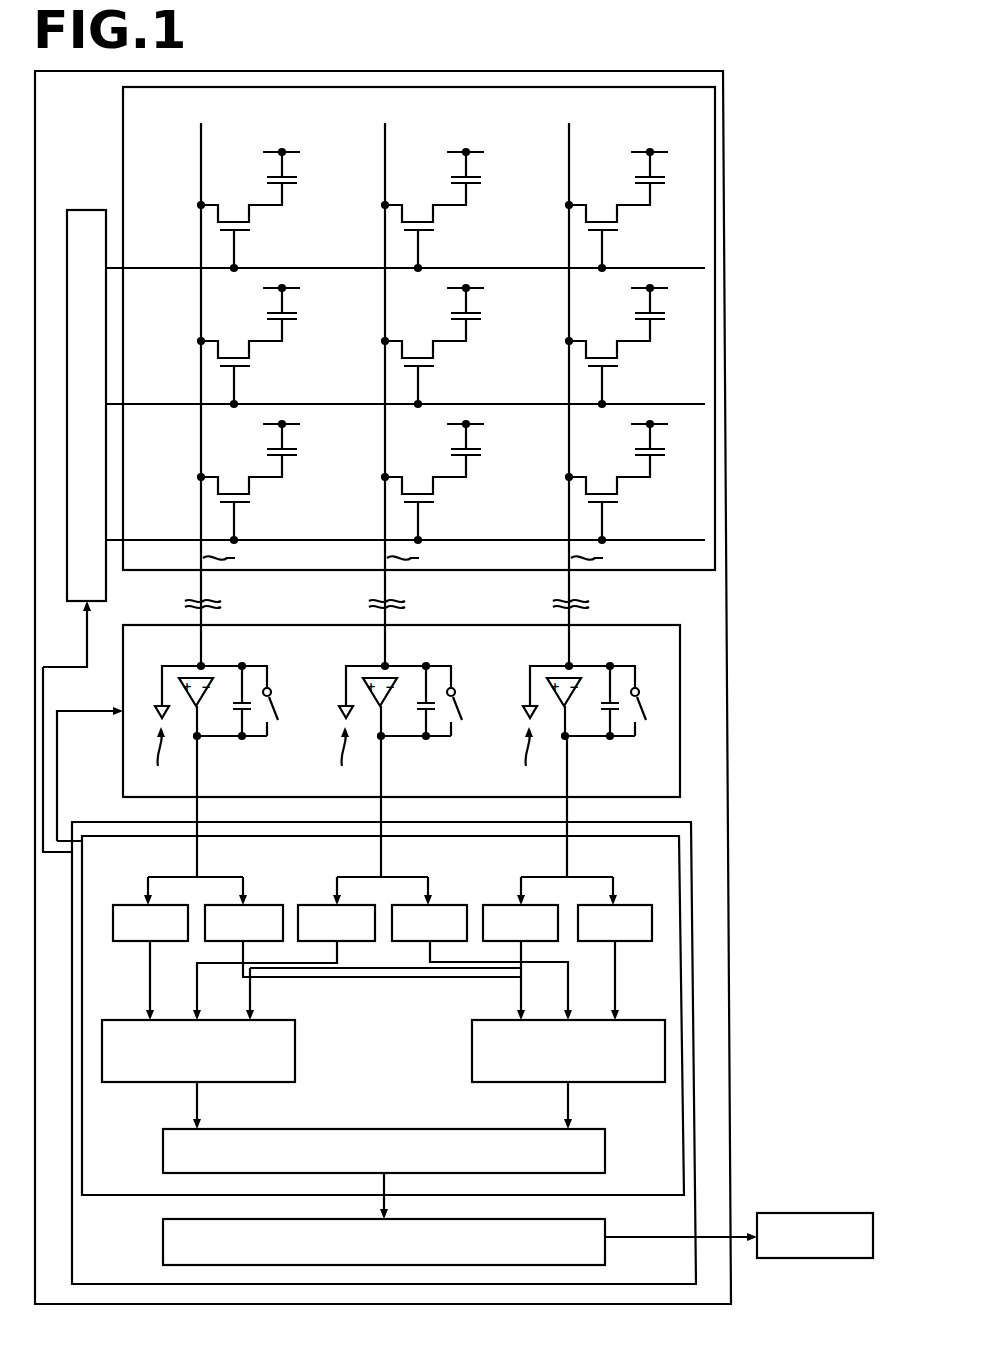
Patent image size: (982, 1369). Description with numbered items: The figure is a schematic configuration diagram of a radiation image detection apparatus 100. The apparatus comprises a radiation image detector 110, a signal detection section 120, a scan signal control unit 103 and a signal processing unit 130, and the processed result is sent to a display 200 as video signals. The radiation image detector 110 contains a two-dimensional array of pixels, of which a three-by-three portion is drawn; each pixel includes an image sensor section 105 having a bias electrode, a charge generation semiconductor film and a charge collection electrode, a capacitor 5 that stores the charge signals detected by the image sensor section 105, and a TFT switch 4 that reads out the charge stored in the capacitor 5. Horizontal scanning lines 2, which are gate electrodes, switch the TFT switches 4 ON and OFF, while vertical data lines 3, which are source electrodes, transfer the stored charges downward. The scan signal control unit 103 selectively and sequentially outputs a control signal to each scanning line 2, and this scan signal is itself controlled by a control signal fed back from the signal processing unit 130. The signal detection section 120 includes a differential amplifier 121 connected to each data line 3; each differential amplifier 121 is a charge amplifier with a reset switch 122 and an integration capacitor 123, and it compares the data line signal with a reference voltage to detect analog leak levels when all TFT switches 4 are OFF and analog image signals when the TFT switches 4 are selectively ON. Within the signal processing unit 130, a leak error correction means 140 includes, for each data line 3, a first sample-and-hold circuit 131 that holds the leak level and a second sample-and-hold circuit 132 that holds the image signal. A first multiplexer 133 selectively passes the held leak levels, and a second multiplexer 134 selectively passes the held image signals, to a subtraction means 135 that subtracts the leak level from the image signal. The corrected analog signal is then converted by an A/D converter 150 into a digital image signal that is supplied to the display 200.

The radiation image detection apparatus 100 is at (727, 709).
The scan signal control unit 103 is at (86, 209).
The image sensor section 105 is at (633, 181).
The TFT switch 4 is at (634, 222).
The capacitor 5 is at (670, 175).
The scanning line 2 is at (690, 538).
The data line 3 is at (409, 394).
The radiation image detector 110 is at (715, 452).
The signal detection section 120 is at (680, 657).
The differential amplifier 121 is at (559, 660).
The reset switch 122 is at (649, 694).
The integration capacitor 123 is at (601, 720).
The signal processing unit 130 is at (696, 1003).
The first sample-and-hold circuit 131 is at (505, 905).
The second sample-and-hold circuit 132 is at (640, 905).
The first multiplexer 133 is at (117, 1082).
The second multiplexer 134 is at (640, 1082).
The subtraction means 135 is at (385, 1128).
The leak error correction means 140 is at (684, 1045).
The A/D converter 150 is at (163, 1247).
The display 200 is at (814, 1212).